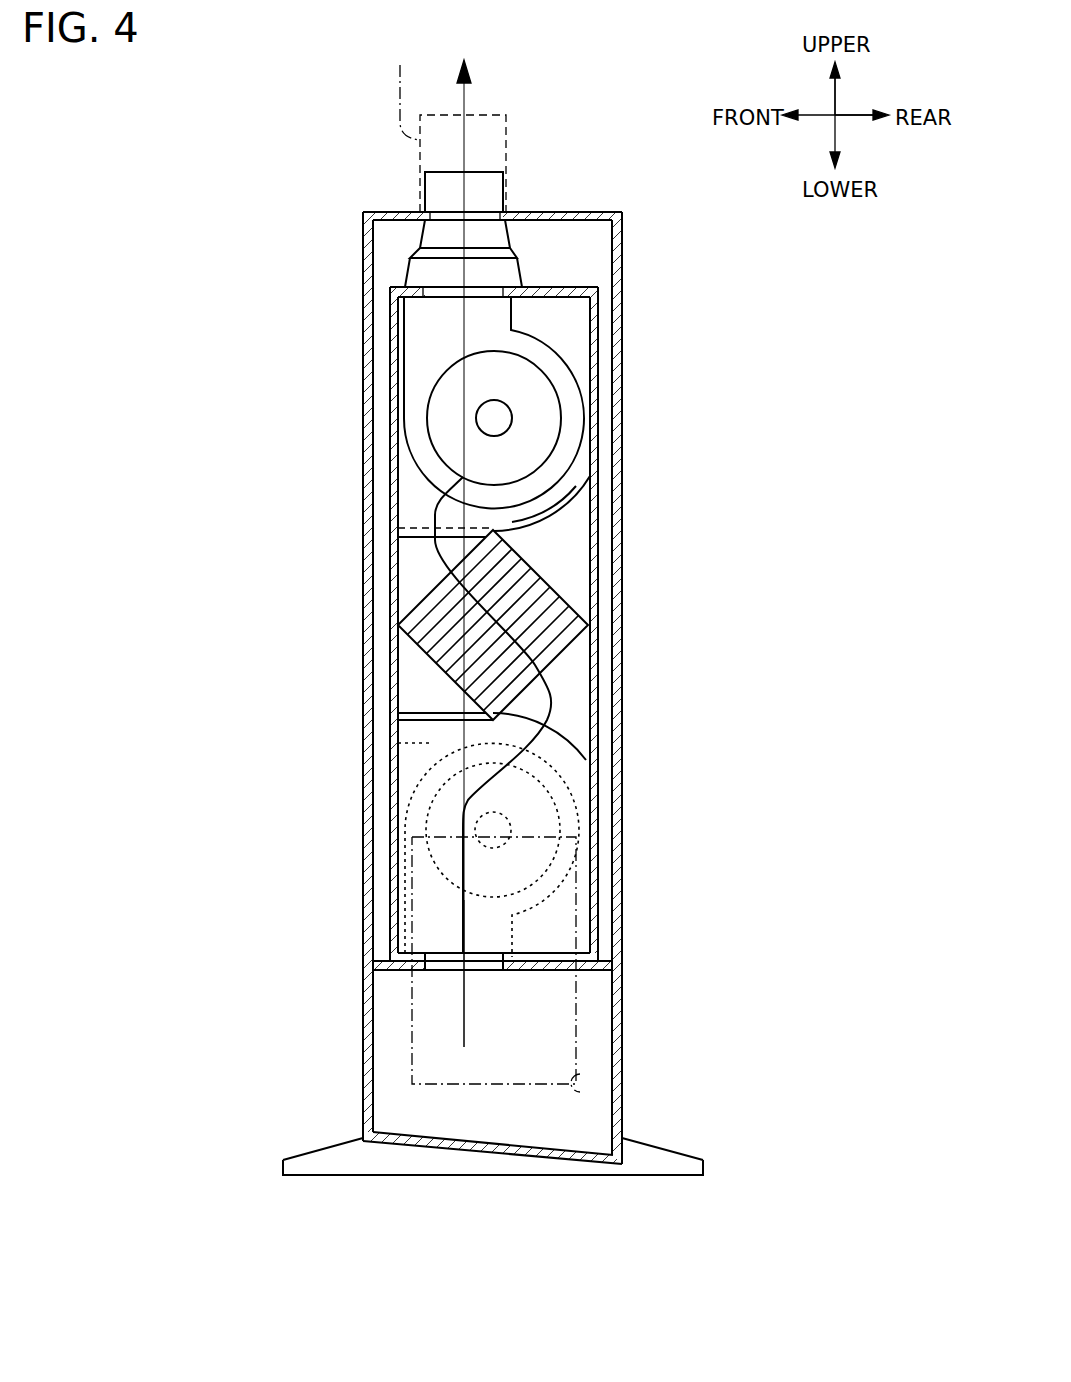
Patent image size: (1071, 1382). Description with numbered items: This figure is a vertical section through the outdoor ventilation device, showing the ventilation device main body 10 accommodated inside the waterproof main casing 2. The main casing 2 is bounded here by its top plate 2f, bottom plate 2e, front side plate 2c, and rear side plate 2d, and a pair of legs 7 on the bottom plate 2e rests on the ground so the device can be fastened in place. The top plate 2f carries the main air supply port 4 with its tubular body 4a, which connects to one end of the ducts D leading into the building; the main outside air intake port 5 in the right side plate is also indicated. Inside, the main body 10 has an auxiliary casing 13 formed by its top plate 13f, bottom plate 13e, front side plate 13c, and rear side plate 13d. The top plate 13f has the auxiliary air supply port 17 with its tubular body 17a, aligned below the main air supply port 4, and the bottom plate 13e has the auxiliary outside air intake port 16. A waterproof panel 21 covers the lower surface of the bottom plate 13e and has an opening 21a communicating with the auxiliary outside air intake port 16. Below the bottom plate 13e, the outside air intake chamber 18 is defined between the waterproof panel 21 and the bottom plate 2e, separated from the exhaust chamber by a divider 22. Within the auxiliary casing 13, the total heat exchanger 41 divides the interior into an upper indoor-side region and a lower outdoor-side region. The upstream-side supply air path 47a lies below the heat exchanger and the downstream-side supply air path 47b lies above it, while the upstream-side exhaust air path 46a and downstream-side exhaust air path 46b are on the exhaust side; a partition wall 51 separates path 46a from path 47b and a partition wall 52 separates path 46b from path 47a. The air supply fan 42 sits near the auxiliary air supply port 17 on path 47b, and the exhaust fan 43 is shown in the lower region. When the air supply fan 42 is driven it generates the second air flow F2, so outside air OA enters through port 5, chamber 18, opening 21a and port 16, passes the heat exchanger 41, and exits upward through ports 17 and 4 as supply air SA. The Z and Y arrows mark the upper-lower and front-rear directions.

The main casing 2 is at (364, 213).
The front side plate 2c is at (368, 577).
The rear side plate 2d is at (614, 537).
The bottom plate 2e is at (480, 1166).
The top plate 2f is at (587, 212).
The main air supply port 4 is at (487, 210).
The tubular body 4a is at (487, 168).
The main outside air intake port 5 is at (582, 1098).
The legs 7 is at (318, 1178).
The ventilation device main body 10 is at (598, 455).
The auxiliary casing 13 is at (598, 387).
The front side plate 13c is at (390, 612).
The rear side plate 13d is at (600, 571).
The bottom plate 13e is at (552, 962).
The top plate 13f is at (552, 287).
The auxiliary outside air intake port 16 is at (500, 960).
The auxiliary air supply port 17 is at (414, 284).
The tubular body 17a is at (420, 232).
The outside air intake chamber 18 is at (400, 1110).
The waterproof panel 21 is at (585, 969).
The opening 21a is at (497, 963).
The divider 22 is at (385, 1018).
The total heat exchanger 41 is at (445, 650).
The air supply fan 42 is at (415, 330).
The exhaust fan 43 is at (407, 790).
The upstream-side exhaust air path 46a is at (407, 500).
The downstream-side exhaust air path 46b is at (407, 743).
The upstream-side supply air path 47a is at (530, 812).
The downstream-side supply air path 47b is at (553, 322).
The partition wall 51 is at (407, 556).
The partition wall 52 is at (572, 768).
The second air flow F2 is at (463, 922).
The outside air OA is at (465, 989).
The supply air SA is at (466, 540).
The ducts D is at (402, 89).
The Z axis Z is at (830, 95).
The Y axis Y is at (852, 117).